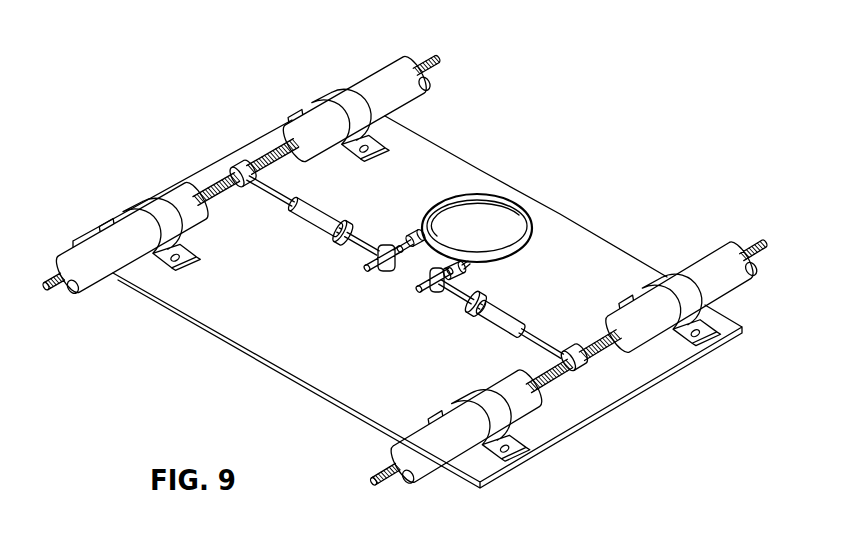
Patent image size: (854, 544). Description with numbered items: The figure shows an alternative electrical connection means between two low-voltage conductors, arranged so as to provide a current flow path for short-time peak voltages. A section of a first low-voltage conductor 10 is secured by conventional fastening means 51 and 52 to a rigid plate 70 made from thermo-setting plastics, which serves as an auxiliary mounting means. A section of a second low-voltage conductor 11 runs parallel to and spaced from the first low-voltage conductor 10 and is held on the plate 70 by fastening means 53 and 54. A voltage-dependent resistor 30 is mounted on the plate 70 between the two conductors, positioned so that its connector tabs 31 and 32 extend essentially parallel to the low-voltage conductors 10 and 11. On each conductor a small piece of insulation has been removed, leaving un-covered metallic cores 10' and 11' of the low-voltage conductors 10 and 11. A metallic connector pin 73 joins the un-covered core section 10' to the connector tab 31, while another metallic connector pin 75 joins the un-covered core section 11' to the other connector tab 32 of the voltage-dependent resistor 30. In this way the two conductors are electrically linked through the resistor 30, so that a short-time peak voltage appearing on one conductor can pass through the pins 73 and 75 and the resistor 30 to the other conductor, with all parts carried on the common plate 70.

The first low-voltage conductor 10 is at (122, 223).
The un-covered metallic core 10' is at (235, 139).
The second low-voltage conductor 11 is at (452, 444).
The un-covered metallic core 11' is at (574, 326).
The voltage-dependent resistor 30 is at (496, 208).
The connector tab 31 is at (375, 273).
The connector tab 32 is at (418, 285).
The fastening means 51 is at (155, 262).
The fastening means 52 is at (331, 96).
The fastening means 53 is at (524, 457).
The fastening means 54 is at (705, 336).
The rigid plate 70 is at (263, 360).
The metallic connector pin 73 is at (300, 224).
The metallic connector pin 75 is at (484, 326).